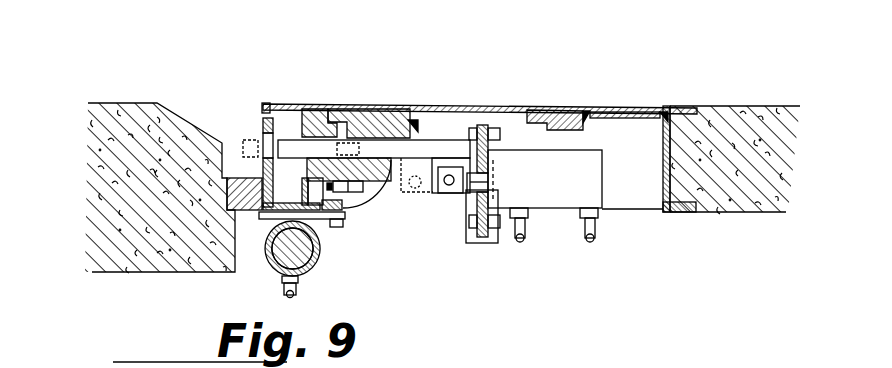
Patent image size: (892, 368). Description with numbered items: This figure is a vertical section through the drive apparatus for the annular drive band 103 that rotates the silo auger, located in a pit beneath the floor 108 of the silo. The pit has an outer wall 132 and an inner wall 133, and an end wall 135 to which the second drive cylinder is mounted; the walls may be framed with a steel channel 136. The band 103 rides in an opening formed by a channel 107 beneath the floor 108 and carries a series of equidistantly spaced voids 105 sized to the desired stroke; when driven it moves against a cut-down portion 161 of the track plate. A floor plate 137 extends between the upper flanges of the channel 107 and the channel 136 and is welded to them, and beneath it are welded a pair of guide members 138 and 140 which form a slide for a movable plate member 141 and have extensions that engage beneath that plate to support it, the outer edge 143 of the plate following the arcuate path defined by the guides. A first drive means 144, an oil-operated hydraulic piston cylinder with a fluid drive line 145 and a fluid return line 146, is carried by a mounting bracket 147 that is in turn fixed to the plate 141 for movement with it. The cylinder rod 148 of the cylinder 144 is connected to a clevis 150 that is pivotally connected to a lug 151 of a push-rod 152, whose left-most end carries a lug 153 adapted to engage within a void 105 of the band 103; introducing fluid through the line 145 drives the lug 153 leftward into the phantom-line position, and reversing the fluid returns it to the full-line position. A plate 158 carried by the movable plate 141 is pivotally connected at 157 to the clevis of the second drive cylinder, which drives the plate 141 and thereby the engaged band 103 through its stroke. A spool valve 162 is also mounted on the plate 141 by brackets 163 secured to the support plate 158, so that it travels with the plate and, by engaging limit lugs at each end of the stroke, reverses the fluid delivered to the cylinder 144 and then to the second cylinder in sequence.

The band 103 is at (263, 118).
The voids 105 is at (257, 140).
The channel 107 is at (283, 105).
The floor 108 is at (132, 103).
The outer wall 132 is at (662, 198).
The inner wall 133 is at (240, 146).
The end wall 135 is at (652, 147).
The steel channel 136 is at (668, 127).
The floor plate 137 is at (585, 118).
The guide member 138 is at (347, 135).
The guide member 140 is at (592, 118).
The movable plate member 141 is at (502, 110).
The outer edge 143 is at (540, 118).
The first drive means 144 is at (587, 182).
The fluid drive line 145 is at (593, 236).
The fluid return line 146 is at (525, 240).
The mounting bracket 147 is at (490, 160).
The cylinder rod 148 is at (463, 212).
The clevis 150 is at (447, 207).
The lug 151 is at (433, 190).
The push-rod 152 is at (443, 145).
The lug 153 is at (308, 109).
The pivotal connection 157 is at (377, 204).
The plate 158 is at (372, 122).
The cut-down portion 161 is at (233, 205).
The spool valve 162 is at (277, 262).
The brackets 163 is at (328, 226).